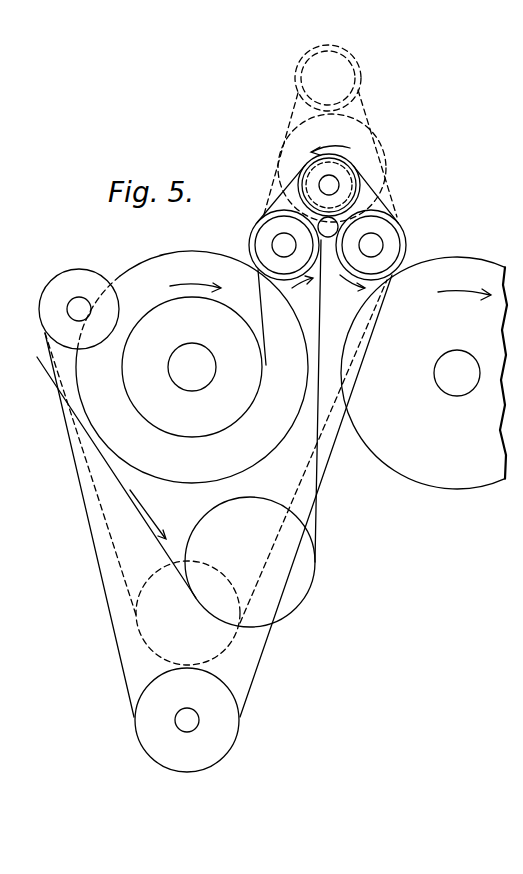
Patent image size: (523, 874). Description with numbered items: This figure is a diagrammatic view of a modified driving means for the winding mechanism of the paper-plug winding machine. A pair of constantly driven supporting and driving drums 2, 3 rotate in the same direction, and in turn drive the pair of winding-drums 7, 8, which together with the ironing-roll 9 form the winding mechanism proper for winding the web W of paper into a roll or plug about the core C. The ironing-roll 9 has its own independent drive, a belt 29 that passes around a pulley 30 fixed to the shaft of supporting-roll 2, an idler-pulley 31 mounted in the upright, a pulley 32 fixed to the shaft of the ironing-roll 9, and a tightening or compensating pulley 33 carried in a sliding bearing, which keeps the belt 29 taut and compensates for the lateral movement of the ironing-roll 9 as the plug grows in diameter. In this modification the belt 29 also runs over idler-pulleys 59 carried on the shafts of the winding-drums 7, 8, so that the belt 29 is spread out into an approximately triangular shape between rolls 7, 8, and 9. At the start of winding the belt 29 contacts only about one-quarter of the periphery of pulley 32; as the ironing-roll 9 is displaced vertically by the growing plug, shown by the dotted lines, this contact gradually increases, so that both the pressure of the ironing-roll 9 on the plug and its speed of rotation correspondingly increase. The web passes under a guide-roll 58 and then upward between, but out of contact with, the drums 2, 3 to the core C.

The drum 2 is at (198, 252).
The drum 3 is at (485, 268).
The winding-drum 7 is at (256, 228).
The winding-drum 8 is at (402, 236).
The ironing-roll 9 is at (347, 160).
The belt 29 is at (257, 282).
The pulley 30 is at (192, 367).
The idler-pulley 31 is at (58, 288).
The pulley 32 is at (327, 188).
The tightening or compensating pulley 33 is at (187, 720).
The guide-roll 58 is at (250, 562).
The idler-pulleys 59 is at (327, 253).
The core C is at (336, 231).
The web W is at (142, 521).